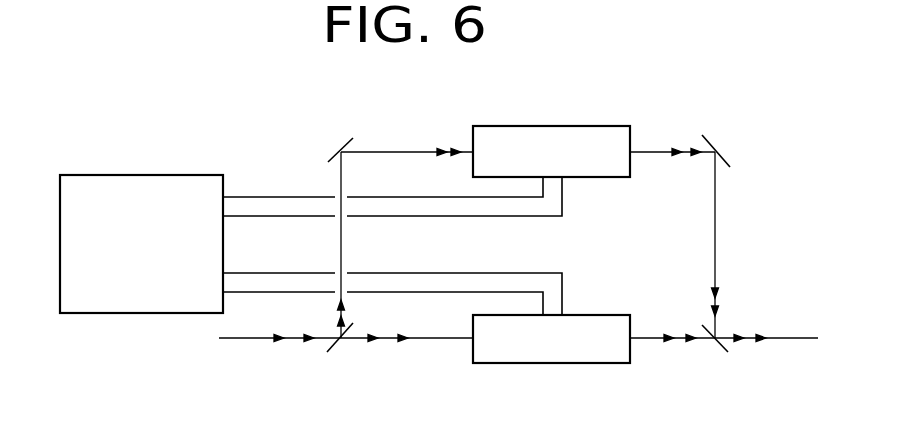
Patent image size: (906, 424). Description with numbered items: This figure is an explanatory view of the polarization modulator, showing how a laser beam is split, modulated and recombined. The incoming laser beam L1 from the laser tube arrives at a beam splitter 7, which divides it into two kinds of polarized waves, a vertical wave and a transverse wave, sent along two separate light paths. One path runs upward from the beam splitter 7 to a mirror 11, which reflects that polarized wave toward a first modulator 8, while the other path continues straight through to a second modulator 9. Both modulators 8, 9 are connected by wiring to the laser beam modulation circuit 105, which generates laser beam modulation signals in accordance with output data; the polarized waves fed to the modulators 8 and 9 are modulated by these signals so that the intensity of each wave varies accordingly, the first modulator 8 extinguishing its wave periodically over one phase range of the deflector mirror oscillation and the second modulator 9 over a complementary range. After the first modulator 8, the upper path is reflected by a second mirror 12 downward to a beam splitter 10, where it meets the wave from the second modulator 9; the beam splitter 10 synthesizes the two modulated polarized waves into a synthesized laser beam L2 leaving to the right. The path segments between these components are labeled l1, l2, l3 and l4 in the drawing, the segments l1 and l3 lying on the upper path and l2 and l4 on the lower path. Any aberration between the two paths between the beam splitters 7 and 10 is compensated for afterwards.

The laser beam modulation circuit 105 is at (161, 179).
The first modulator 8 is at (560, 126).
The second modulator 9 is at (560, 364).
The mirror 11 is at (340, 149).
The beam splitter 7 is at (339, 344).
The mirror 12 is at (720, 148).
The beam splitter 10 is at (720, 345).
The light beam l1 is at (436, 148).
The light beam l2 is at (434, 341).
The light beam l3 is at (665, 149).
The light beam l4 is at (654, 341).
The laser beam L1 is at (261, 341).
The synthesized laser beam L2 is at (782, 341).